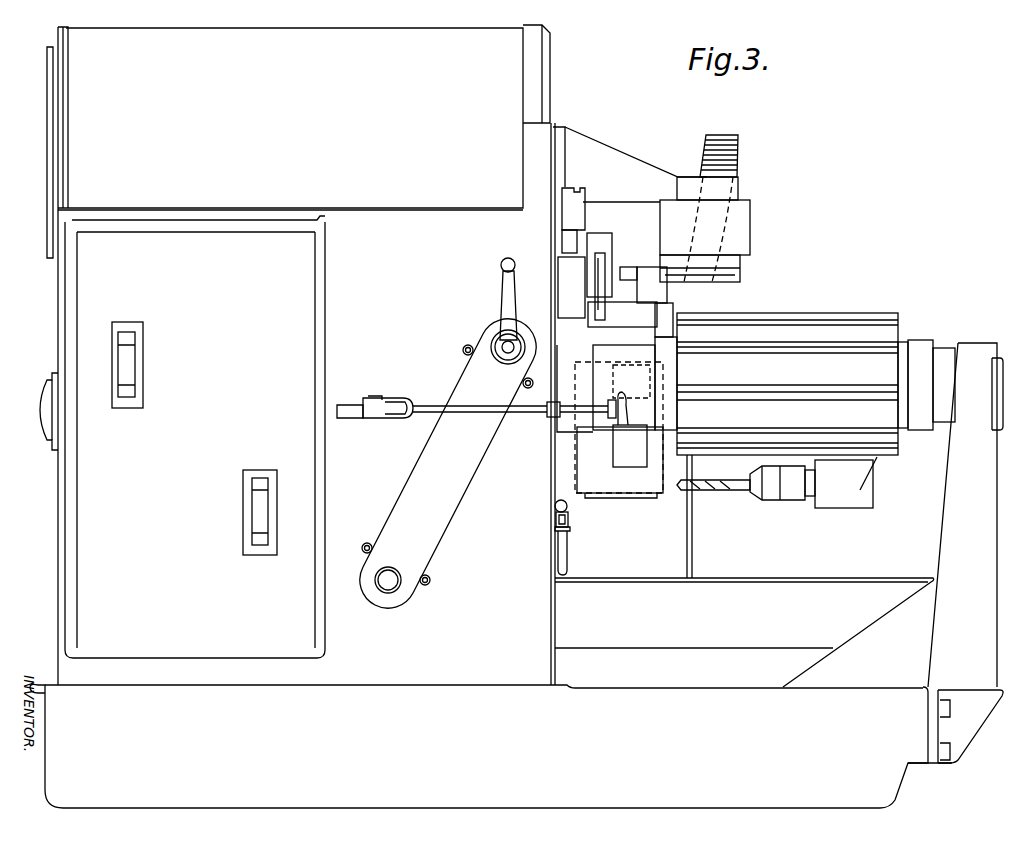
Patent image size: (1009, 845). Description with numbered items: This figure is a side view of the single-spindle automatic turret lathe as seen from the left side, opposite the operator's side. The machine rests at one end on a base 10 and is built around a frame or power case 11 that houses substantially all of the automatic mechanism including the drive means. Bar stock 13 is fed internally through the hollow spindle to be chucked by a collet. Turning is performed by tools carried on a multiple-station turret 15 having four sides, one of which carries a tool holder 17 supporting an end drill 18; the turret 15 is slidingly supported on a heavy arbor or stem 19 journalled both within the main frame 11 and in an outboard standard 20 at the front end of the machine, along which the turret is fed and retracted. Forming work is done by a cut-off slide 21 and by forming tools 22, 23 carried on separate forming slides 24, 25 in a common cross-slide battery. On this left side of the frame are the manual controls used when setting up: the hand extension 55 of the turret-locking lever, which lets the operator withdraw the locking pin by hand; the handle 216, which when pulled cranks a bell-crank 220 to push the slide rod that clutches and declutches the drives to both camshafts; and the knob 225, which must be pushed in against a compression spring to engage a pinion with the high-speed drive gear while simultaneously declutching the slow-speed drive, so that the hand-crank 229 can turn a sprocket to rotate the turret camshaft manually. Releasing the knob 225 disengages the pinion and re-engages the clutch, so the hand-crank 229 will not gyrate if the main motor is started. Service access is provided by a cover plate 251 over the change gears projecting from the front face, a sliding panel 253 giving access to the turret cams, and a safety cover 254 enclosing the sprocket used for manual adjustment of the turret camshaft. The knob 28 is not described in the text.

The base 10 is at (493, 690).
The frame or power case 11 is at (58, 288).
The bar stock 13 is at (675, 306).
The multiple-station turret 15 is at (793, 355).
The tool holder 17 is at (843, 498).
The end drill 18 is at (705, 484).
The arbor or stem 19 is at (603, 420).
The outboard standard 20 is at (965, 518).
The cut-off slide 21 is at (580, 202).
The forming tool 22 is at (628, 268).
The forming tool 23 is at (646, 386).
The forming slide 24 is at (650, 292).
The forming slide 25 is at (637, 488).
The knob 28 is at (733, 155).
The hand extension 55 is at (570, 516).
The handle 216 is at (622, 420).
The bell-crank 220 is at (386, 418).
The knob 225 is at (388, 595).
The hand-crank 229 is at (500, 292).
The cover plate 251 is at (568, 548).
The sliding panel 253 is at (300, 231).
The safety cover 254 is at (447, 508).